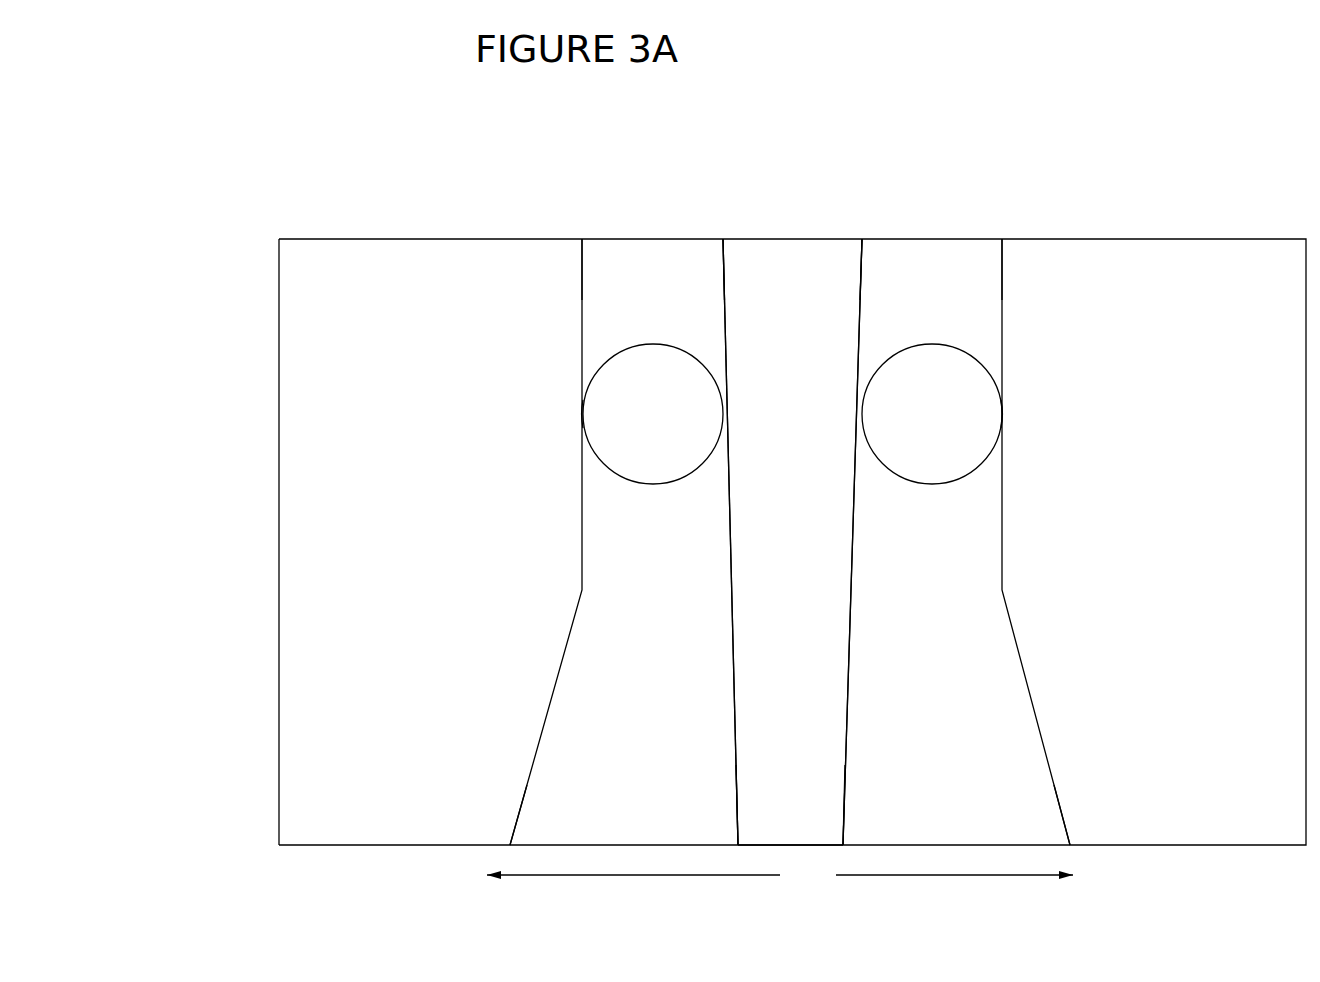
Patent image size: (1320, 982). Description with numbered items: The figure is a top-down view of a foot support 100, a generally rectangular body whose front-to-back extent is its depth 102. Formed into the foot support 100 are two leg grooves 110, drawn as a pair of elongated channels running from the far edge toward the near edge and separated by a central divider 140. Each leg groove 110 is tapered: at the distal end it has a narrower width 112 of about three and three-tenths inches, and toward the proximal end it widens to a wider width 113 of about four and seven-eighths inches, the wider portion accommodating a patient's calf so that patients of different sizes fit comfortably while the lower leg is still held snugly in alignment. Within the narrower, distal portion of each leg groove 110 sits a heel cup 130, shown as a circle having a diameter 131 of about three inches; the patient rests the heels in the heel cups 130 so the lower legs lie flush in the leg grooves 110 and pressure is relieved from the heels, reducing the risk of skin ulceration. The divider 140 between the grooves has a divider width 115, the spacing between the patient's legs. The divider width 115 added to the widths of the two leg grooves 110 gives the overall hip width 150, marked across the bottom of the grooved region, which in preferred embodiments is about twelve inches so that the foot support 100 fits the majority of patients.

The foot support 100 is at (235, 614).
The depth 102 is at (279, 542).
The leg grooves 110 is at (650, 658).
The width 112 is at (718, 270).
The wider width 113 is at (523, 838).
The divider width 115 is at (735, 690).
The heel cups 130 is at (917, 410).
The diameter 131 is at (582, 412).
The divider 140 is at (800, 728).
The hip width 150 is at (780, 878).